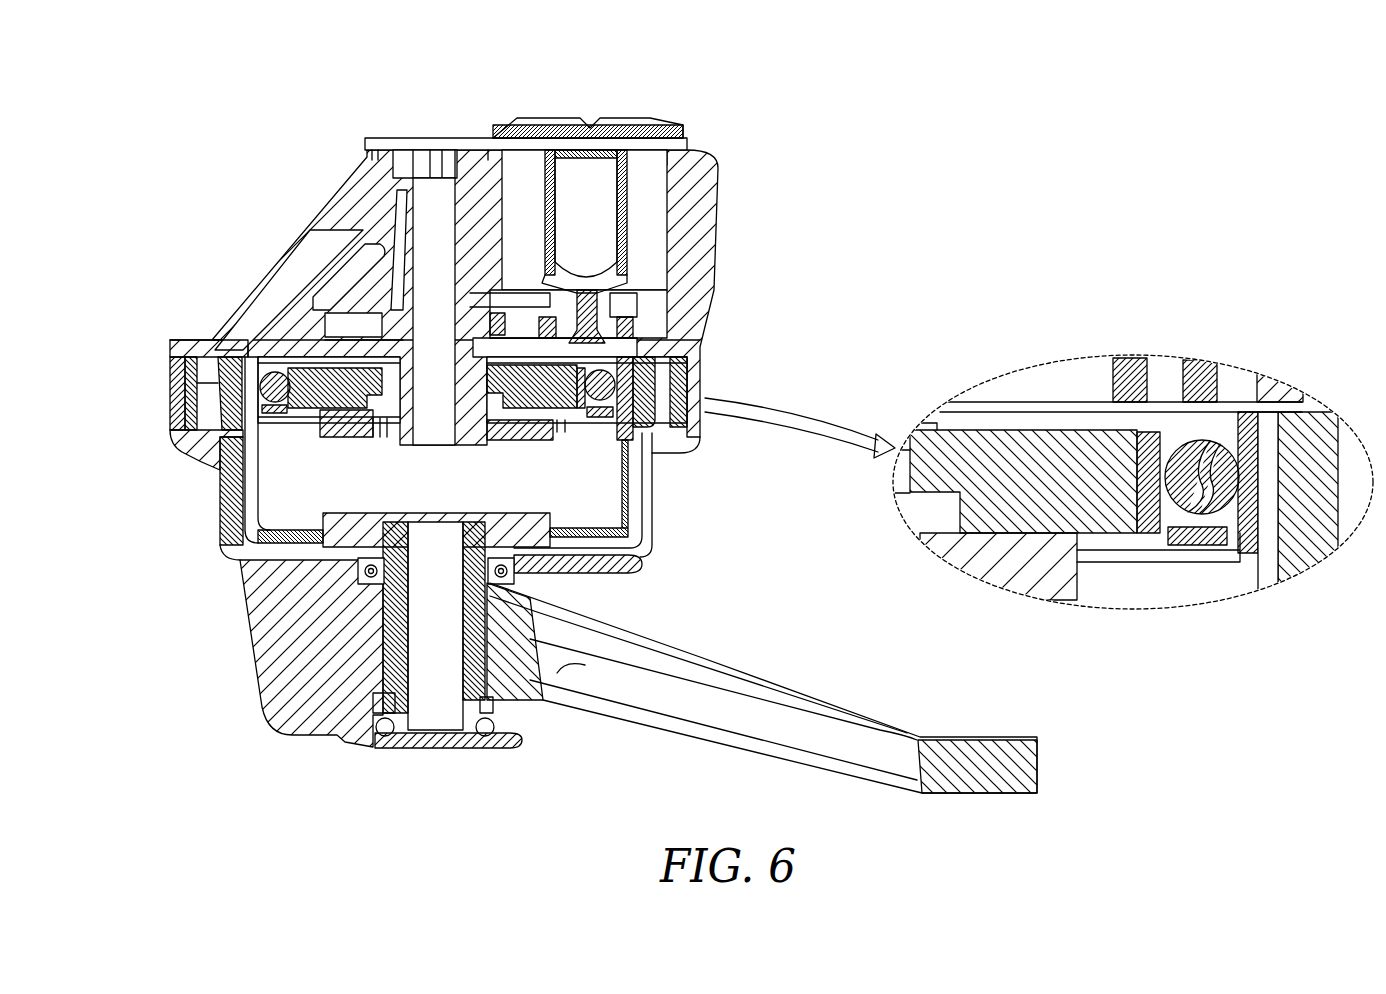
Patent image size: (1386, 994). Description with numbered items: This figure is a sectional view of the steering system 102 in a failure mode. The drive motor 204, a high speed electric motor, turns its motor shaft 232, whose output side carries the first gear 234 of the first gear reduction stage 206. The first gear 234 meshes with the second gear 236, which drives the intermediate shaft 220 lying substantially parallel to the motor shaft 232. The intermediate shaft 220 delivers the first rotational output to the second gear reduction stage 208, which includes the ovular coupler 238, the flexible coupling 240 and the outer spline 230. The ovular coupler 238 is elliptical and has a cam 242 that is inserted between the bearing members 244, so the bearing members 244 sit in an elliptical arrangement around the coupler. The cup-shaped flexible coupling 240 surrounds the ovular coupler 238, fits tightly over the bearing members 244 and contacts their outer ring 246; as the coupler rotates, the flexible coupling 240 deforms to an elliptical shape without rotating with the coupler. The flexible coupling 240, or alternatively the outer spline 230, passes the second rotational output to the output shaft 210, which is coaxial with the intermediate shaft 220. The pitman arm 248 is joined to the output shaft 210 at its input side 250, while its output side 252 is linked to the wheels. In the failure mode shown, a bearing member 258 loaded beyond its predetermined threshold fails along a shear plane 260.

The steering system 102 is at (858, 120).
The drive motor 204 is at (718, 178).
The first gear reduction stage 206 is at (312, 331).
The second gear reduction stage 208 is at (160, 371).
The output shaft 210 is at (393, 657).
The intermediate shaft 220 is at (400, 216).
The outer spline 230 is at (182, 402).
The motor shaft 232 is at (580, 188).
The first gear 234 is at (622, 326).
The second gear 236 is at (335, 303).
The ovular coupler 238 is at (297, 425).
The flexible coupling 240 is at (245, 493).
The cam 242 is at (540, 476).
The bearing members 244 is at (215, 385).
The outer ring 246 is at (690, 380).
The pitman arm 248 is at (545, 690).
The input side 250 is at (340, 742).
The output side 252 is at (942, 716).
The bearing member 258 is at (640, 448).
The shear plane 260 is at (660, 357).